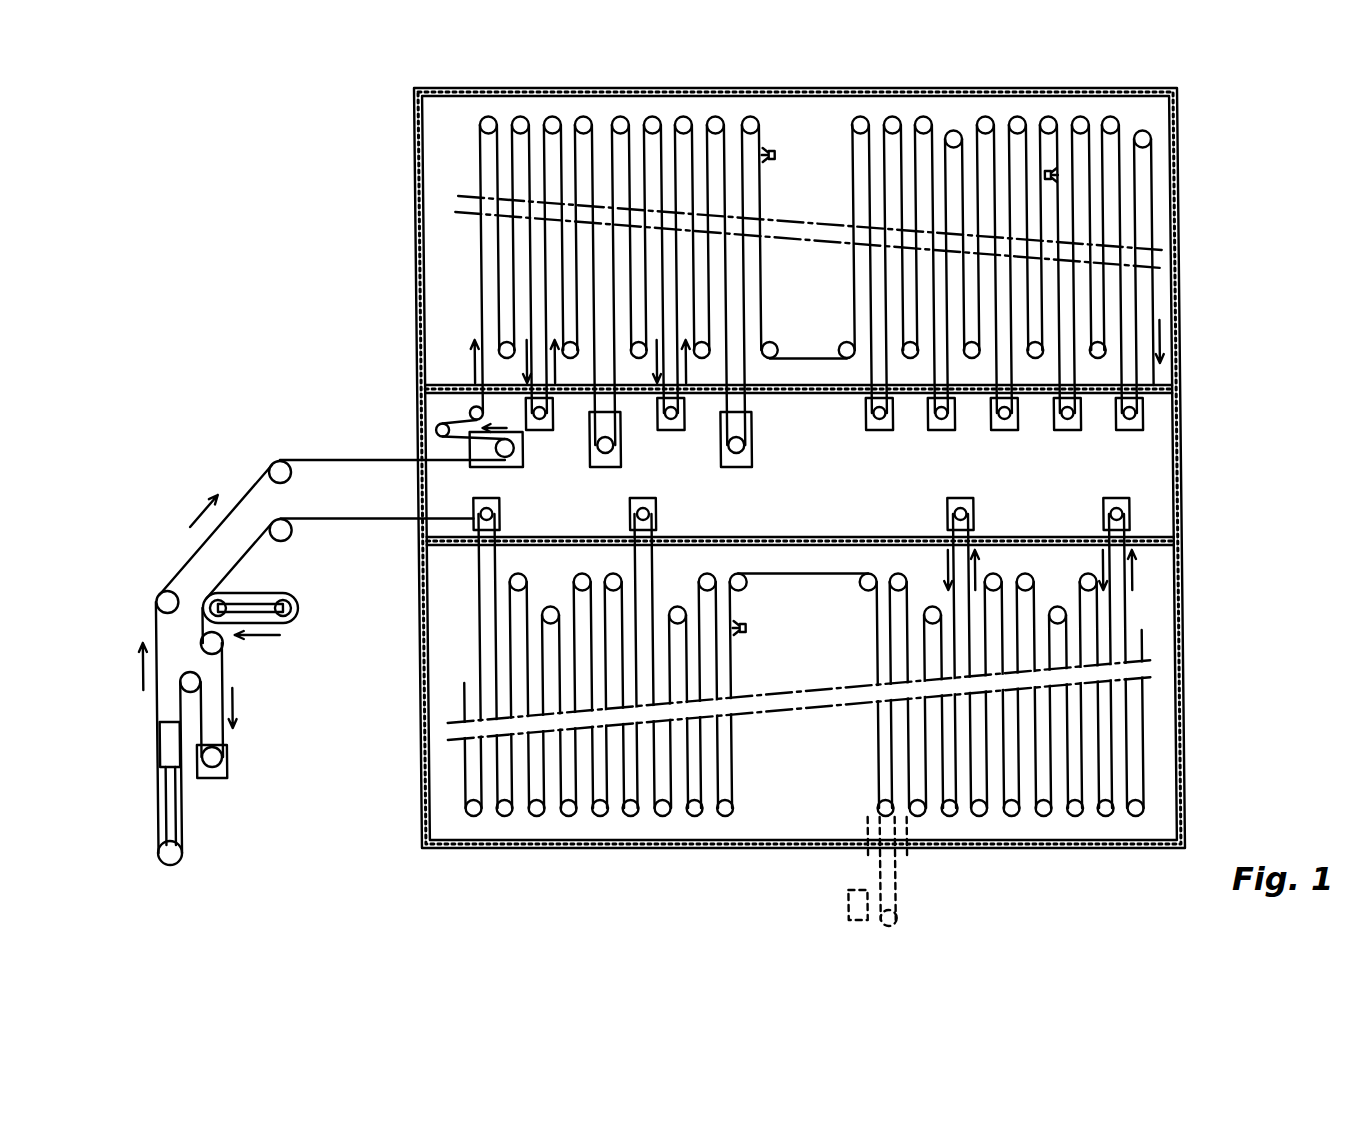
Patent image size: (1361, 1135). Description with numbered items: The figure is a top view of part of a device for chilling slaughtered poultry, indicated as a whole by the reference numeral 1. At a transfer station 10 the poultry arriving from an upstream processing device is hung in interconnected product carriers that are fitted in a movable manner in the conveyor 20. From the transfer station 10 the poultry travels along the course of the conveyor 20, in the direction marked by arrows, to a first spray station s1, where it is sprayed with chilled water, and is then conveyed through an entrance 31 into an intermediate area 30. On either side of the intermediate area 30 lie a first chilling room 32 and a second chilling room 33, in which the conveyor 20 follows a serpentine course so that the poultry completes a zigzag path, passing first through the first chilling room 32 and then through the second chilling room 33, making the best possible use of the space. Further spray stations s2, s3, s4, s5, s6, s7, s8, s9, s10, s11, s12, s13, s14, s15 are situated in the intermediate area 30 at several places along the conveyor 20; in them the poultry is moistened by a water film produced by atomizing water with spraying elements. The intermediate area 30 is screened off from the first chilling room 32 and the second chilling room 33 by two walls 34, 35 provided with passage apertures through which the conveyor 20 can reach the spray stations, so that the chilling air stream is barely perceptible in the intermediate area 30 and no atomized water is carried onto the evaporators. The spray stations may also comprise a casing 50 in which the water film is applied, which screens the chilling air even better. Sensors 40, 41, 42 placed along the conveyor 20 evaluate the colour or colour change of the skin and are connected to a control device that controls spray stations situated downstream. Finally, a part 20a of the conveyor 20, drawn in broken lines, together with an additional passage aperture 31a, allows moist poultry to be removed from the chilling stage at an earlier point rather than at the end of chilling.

The device for chilling slaughtered poultry 1 is at (818, 468).
The transfer station 10 is at (287, 610).
The conveyor 20 is at (332, 440).
The part of the conveyor 20a is at (882, 900).
The intermediate area 30 is at (801, 504).
The entrance 31 is at (416, 480).
The additional passage aperture 31a is at (867, 853).
The first chilling room 32 is at (822, 317).
The second chilling room 33 is at (795, 779).
The wall 34 is at (821, 394).
The wall 35 is at (815, 537).
The sensor 40 is at (776, 151).
The sensor 41 is at (1043, 176).
The sensor 42 is at (742, 626).
The casing 50 is at (1125, 503).
The first spray station s1 is at (211, 777).
The spray station s2 is at (491, 457).
The spray station s3 is at (536, 430).
The spray station s4 is at (603, 448).
The spray station s5 is at (667, 430).
The spray station s6 is at (738, 444).
The spray station s7 is at (876, 430).
The spray station s8 is at (938, 430).
The spray station s9 is at (1001, 430).
The spray station s10 is at (1064, 430).
The spray station s11 is at (1126, 430).
The spray station s12 is at (495, 512).
The spray station s13 is at (652, 512).
The spray station s14 is at (943, 512).
The spray station s15 is at (1099, 512).